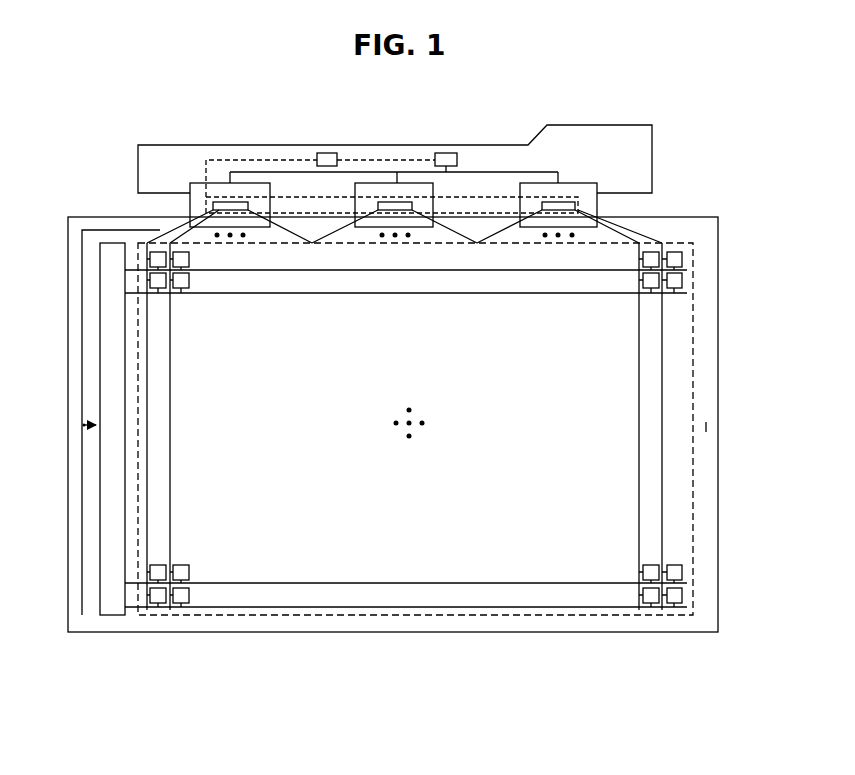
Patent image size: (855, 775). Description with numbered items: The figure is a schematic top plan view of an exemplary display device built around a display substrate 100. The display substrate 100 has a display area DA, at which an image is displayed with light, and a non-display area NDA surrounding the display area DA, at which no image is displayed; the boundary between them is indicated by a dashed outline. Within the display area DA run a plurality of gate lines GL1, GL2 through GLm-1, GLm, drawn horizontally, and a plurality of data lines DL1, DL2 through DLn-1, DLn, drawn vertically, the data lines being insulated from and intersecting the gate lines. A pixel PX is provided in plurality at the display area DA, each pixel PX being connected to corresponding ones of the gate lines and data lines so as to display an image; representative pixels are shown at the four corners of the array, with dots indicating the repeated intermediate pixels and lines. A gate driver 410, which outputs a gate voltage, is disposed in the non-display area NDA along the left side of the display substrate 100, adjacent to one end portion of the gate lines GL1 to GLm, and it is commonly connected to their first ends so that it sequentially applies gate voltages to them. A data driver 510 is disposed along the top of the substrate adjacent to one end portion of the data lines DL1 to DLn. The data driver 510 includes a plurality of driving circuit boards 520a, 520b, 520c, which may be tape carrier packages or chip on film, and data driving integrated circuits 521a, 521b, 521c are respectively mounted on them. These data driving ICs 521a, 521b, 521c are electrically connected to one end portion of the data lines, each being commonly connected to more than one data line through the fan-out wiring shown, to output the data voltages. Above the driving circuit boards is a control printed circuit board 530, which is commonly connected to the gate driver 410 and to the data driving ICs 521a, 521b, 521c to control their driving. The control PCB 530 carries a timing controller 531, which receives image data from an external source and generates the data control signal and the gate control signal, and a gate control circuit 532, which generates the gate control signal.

The display substrate 100 is at (720, 214).
The gate driver 410 is at (98, 362).
The data driver 510 is at (487, 197).
The driving circuit board 520a is at (243, 183).
The driving circuit board 520b is at (407, 183).
The driving circuit board 520c is at (577, 183).
The data driving integrated circuit 521a is at (222, 202).
The data driving integrated circuit 521b is at (387, 202).
The data driving integrated circuit 521c is at (552, 202).
The control printed circuit board 530 is at (633, 155).
The timing controller 531 is at (446, 153).
The gate control circuit 532 is at (327, 153).
The pixel PX is at (153, 248).
The data line DL1 is at (147, 438).
The data line DL2 is at (170, 468).
The data line DLn-1 is at (639, 373).
The data line DLn is at (662, 403).
The gate line GL1 is at (370, 270).
The gate line GL2 is at (418, 293).
The gate line GLm-1 is at (367, 583).
The gate line GLm is at (435, 607).
The display area DA is at (694, 383).
The non-display area NDA is at (706, 427).